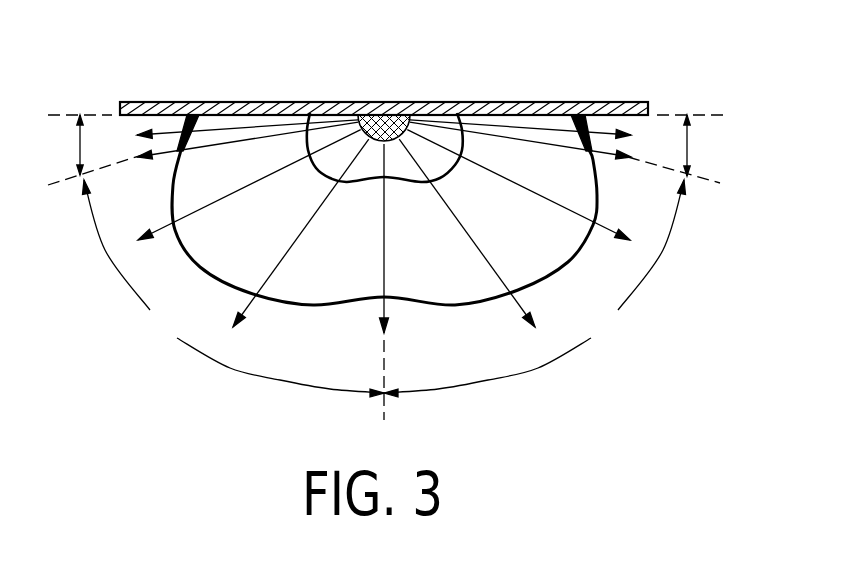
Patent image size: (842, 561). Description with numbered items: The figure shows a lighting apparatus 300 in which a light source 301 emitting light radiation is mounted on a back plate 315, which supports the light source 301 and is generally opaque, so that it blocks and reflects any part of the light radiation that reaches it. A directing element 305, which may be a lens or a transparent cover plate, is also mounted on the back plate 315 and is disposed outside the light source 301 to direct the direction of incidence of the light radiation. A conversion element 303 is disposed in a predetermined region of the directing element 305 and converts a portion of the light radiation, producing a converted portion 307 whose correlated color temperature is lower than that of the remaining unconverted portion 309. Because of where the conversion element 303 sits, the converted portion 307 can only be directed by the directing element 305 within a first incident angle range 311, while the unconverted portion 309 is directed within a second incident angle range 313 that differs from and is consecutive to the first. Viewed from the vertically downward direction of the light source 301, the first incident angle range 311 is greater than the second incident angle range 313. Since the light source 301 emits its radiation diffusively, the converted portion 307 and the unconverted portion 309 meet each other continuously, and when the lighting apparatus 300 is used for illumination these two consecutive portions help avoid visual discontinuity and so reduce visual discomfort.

The lighting apparatus 300 is at (92, 27).
The light source 301 is at (380, 113).
The conversion element 303 is at (177, 117).
The directing element 305 is at (533, 247).
The converted portion of the light radiation 307 is at (497, 128).
The unconverted portion of the light radiation 309 is at (612, 222).
The first incident angle range 311 is at (385, 150).
The second incident angle range 313 is at (384, 300).
The back plate 315 is at (592, 112).